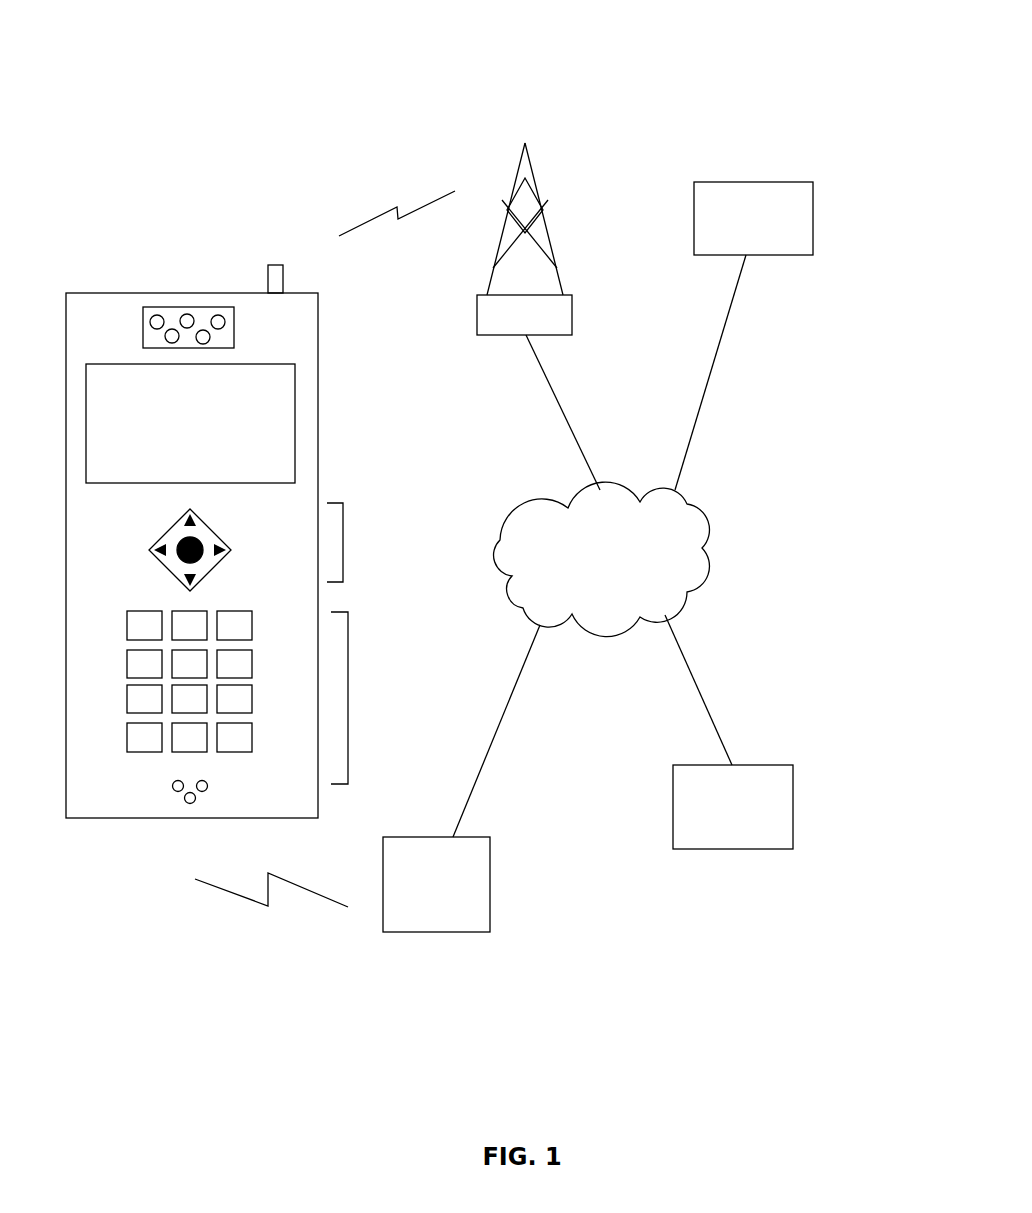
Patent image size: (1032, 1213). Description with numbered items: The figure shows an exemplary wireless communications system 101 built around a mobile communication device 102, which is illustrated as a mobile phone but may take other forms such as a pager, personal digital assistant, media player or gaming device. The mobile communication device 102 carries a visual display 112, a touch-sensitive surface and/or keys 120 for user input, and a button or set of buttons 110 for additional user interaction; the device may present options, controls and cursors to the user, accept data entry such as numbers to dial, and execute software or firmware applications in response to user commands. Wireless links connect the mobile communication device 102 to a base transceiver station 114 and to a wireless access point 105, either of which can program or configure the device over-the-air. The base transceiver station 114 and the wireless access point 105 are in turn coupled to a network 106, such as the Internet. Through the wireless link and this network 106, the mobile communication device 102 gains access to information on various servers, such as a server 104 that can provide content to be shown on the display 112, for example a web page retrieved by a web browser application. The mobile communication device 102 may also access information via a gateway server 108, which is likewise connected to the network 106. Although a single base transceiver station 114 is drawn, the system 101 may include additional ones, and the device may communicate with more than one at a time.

The wireless communications system 101 is at (780, 128).
The mobile communication device 102 is at (99, 293).
The server 104 is at (705, 849).
The wireless access point 105 is at (430, 932).
The wireless network 106 is at (717, 560).
The gateway server 108 is at (813, 218).
The button or set of buttons 110 is at (343, 525).
The visual display 112 is at (297, 415).
The base transceiver station 114 is at (572, 303).
The keys 120 is at (348, 645).